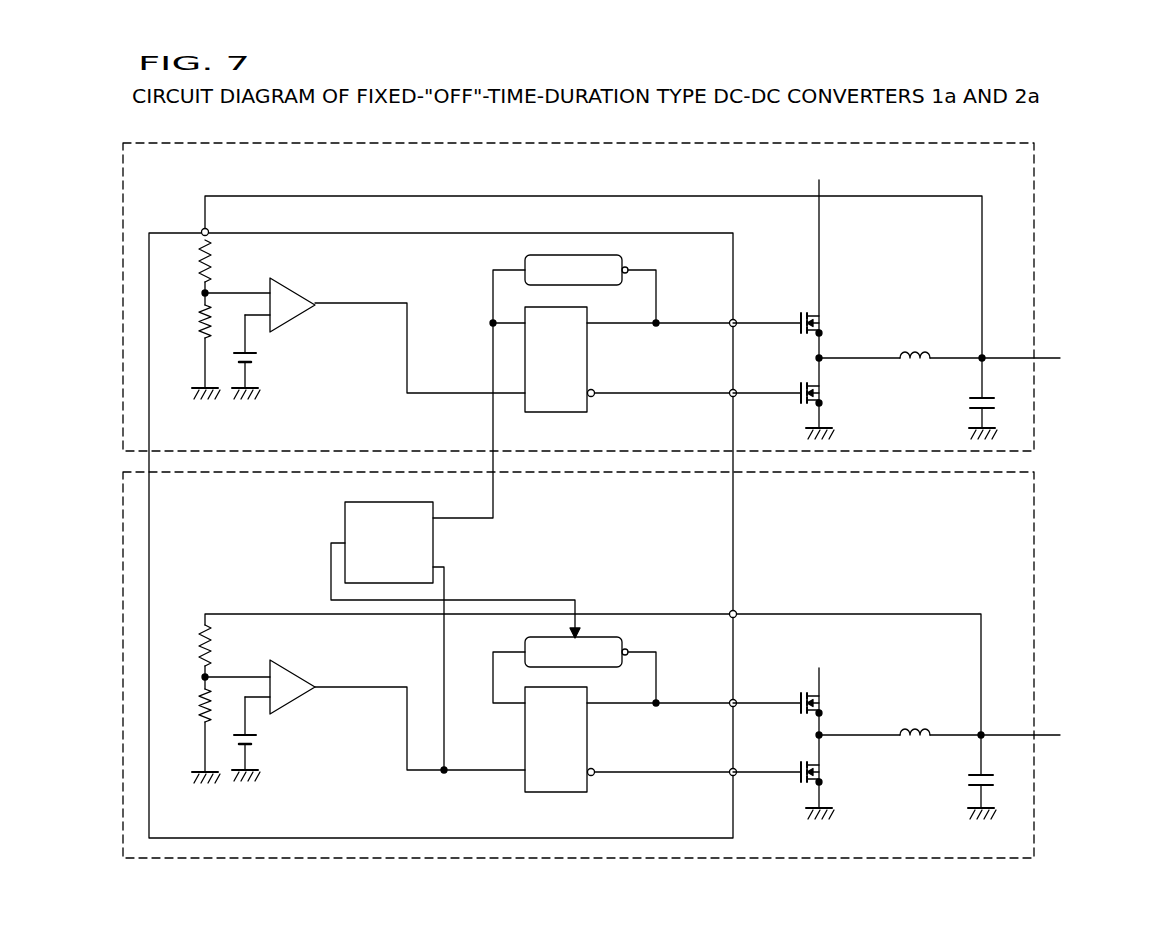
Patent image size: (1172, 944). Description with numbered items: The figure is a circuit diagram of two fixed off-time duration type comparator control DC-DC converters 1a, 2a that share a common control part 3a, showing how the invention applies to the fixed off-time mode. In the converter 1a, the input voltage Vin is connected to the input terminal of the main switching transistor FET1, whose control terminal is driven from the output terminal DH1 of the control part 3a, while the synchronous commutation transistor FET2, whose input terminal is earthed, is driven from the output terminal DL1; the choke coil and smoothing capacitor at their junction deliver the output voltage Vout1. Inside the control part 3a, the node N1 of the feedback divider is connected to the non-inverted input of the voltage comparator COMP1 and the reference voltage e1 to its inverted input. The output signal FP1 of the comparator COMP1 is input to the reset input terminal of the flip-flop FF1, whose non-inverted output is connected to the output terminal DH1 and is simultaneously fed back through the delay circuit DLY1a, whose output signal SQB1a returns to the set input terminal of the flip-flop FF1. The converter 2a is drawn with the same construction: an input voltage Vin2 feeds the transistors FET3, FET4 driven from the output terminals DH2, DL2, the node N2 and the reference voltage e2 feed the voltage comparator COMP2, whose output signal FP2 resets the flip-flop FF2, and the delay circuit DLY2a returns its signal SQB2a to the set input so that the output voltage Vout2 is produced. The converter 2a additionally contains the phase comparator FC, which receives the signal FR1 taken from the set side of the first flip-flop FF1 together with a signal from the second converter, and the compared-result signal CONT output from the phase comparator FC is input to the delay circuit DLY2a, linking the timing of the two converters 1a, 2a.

The DC-DC converter 1a is at (1034, 236).
The DC-DC converter 2a is at (1034, 615).
The control part 3a is at (362, 233).
The input voltage Vin is at (592, 297).
The node N1 is at (221, 319).
The voltage comparator COMP1 is at (278, 291).
The reference voltage e1 is at (258, 357).
The output signal FP1 is at (420, 336).
The delay circuit DLY1a is at (616, 248).
The delay circuit output signal SQB1a is at (678, 297).
The flip-flop FF1 is at (570, 412).
The output terminal DH1 is at (685, 313).
The output terminal DL1 is at (687, 383).
The transistor FET1 is at (805, 325).
The transistor FET2 is at (805, 395).
The output voltage Vout1 is at (970, 393).
The phase comparator FC is at (345, 509).
The phase comparator input signal FR1 is at (463, 420).
The compared-result signal CONT is at (421, 590).
The input voltage Vin2 is at (593, 715).
The node N2 (voltage divider) N2 is at (221, 704).
The comparator 2 COMP2 is at (278, 675).
The reference voltage source e2 is at (258, 739).
The comparator output signal FP2 is at (420, 716).
The delay circuit DLY2a is at (616, 630).
The delay circuit output signal SQB2a is at (678, 678).
The flip-flop 2 FF2 is at (570, 792).
The high-side drive signal DH2 is at (685, 693).
The low-side drive signal DL2 is at (687, 762).
The high-side switching transistor FET3 is at (805, 705).
The low-side switching transistor FET4 is at (805, 774).
The output voltage 2 Vout2 is at (970, 772).